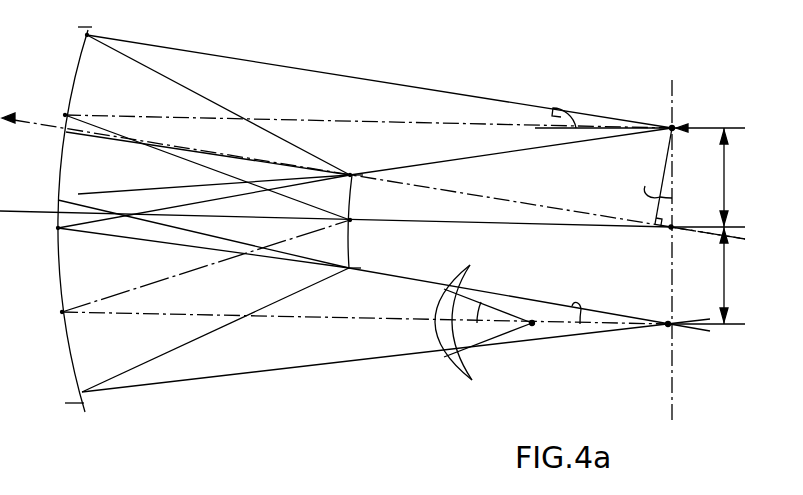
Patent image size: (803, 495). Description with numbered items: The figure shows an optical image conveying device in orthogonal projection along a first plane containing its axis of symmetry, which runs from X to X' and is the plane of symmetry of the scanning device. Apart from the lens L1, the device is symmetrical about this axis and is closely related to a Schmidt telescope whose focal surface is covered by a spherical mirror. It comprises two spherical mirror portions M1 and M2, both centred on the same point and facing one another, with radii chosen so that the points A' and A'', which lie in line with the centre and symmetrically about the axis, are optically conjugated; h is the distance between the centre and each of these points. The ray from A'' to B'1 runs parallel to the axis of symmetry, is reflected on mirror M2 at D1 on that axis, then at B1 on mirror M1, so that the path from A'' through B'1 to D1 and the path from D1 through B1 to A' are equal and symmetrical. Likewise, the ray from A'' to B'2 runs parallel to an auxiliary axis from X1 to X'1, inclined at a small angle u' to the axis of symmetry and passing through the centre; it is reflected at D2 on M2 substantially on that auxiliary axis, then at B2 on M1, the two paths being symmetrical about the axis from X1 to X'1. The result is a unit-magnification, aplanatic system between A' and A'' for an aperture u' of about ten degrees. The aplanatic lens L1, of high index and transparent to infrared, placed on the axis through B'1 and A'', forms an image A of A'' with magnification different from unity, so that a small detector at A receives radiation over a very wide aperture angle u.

The spherical mirror portion M1 is at (74, 380).
The spherical mirror portion M2 is at (351, 249).
The aplanatic lens L1 is at (446, 360).
The reflection point on mirror M1 B2 is at (87, 35).
The reflection point on mirror M1 B1 is at (65, 115).
The reflection point on mirror M1 B'2 is at (38, 239).
The reflection point on mirror M1 B'1 is at (41, 318).
The auxiliary axis end point X1 is at (372, 176).
The reflection point on mirror M2 D2 is at (353, 176).
The reflection point on mirror M2 D1 is at (353, 217).
The image point A is at (534, 302).
The object point A' is at (405, 163).
The image point A'' is at (403, 313).
The axis of symmetry end point X' is at (715, 214).
The auxiliary axis end point X'1 is at (719, 240).
The aperture angle u is at (470, 312).
The aperture angle u' is at (612, 207).
The distance h is at (714, 226).